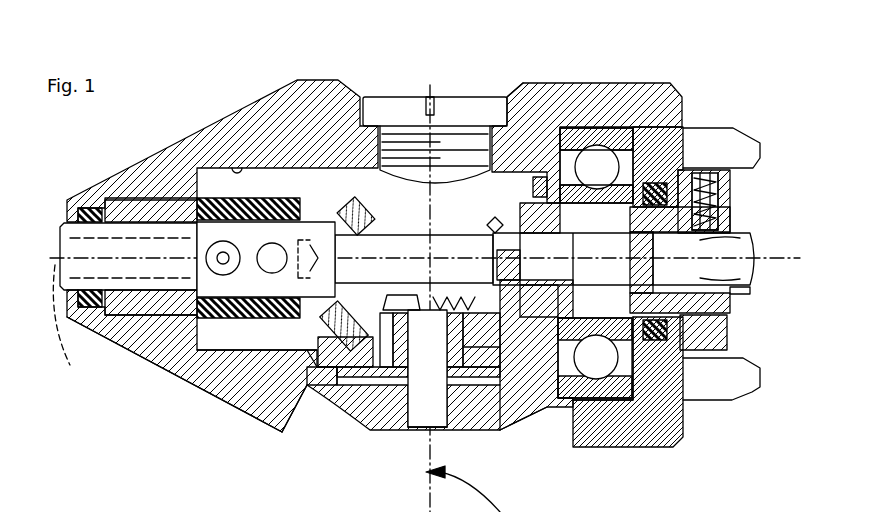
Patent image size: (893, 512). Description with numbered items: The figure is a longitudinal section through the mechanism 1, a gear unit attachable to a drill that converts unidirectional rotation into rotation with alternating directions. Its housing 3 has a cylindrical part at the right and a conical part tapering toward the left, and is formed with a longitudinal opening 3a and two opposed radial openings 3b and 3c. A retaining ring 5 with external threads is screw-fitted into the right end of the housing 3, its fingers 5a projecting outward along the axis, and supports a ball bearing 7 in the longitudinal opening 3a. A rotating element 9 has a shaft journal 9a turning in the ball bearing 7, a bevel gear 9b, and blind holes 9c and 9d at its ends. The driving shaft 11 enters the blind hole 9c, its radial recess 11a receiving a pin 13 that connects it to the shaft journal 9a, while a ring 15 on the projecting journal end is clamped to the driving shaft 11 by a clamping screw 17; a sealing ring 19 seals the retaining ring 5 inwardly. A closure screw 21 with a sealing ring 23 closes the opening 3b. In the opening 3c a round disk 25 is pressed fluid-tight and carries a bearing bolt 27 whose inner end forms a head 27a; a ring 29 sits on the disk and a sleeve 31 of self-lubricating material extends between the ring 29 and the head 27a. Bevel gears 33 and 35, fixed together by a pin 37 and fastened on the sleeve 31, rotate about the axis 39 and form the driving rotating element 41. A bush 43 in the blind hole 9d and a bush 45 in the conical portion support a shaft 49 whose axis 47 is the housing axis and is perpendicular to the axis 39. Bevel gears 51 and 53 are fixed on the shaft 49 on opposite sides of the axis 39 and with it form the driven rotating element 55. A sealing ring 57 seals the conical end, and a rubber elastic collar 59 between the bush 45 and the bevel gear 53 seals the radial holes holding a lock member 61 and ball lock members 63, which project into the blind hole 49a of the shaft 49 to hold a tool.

The mechanism 1 is at (160, 135).
The housing 3 is at (610, 83).
The longitudinal opening 3a is at (237, 163).
The radial opening 3b is at (507, 113).
The radial opening 3c is at (542, 410).
The retaining ring 5 is at (657, 140).
The fingers 5a is at (697, 127).
The ball bearing 7 is at (573, 130).
The rotating element 9 is at (547, 193).
The shaft journal 9a is at (587, 180).
The bevel gear 9b is at (520, 195).
The blind hole 9c is at (745, 294).
The blind hole 9d is at (547, 293).
The driving shaft 11 is at (735, 300).
The radial recess 11a is at (745, 270).
The pin 13 is at (740, 248).
The ring 15 is at (730, 212).
The clamping screw 17 is at (720, 180).
The sealing ring 19 is at (713, 125).
The closure screw 21 is at (395, 97).
The sealing ring 23 is at (363, 110).
The round disk 25 is at (365, 378).
The bearing bolt 27 is at (425, 428).
The head 27a is at (413, 295).
The ring 29 is at (340, 380).
The sleeve 31 is at (498, 380).
The bevel gear 33 is at (316, 325).
The bevel gear 35 is at (518, 392).
The pin 37 is at (398, 370).
The axis 39 is at (440, 432).
The rotating element 41 is at (377, 292).
The bush 43 is at (612, 397).
The bush 45 is at (155, 310).
The axis 47 is at (55, 260).
The shaft 49 is at (150, 200).
The blind hole 49a is at (74, 331).
The bevel gear 51 is at (497, 220).
The bevel gear 53 is at (360, 208).
The rotating element 55 is at (300, 385).
The sealing ring 57 is at (90, 208).
The collar 59 is at (228, 320).
The lock member 61 is at (176, 355).
The lock member 63 is at (312, 240).